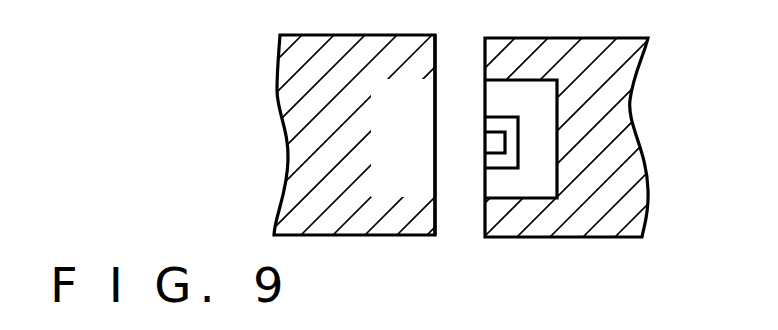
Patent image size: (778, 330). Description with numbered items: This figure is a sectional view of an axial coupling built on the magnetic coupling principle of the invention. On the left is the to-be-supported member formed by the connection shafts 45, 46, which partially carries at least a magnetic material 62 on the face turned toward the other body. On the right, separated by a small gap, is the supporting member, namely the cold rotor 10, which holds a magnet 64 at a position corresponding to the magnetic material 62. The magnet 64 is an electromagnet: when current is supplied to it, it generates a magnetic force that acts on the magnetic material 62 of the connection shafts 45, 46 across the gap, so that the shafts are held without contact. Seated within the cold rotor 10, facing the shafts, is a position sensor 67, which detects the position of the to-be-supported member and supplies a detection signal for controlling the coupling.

The cold rotor 10 is at (577, 222).
The connection shaft 45 is at (365, 222).
The connection shaft 46 is at (359, 152).
The magnetic material 62 is at (436, 153).
The magnet 64 is at (483, 90).
The position sensor 67 is at (483, 143).